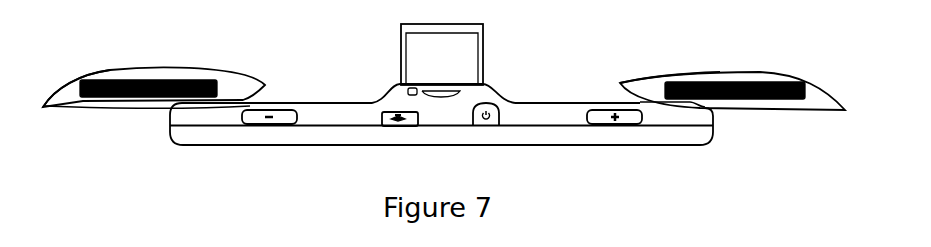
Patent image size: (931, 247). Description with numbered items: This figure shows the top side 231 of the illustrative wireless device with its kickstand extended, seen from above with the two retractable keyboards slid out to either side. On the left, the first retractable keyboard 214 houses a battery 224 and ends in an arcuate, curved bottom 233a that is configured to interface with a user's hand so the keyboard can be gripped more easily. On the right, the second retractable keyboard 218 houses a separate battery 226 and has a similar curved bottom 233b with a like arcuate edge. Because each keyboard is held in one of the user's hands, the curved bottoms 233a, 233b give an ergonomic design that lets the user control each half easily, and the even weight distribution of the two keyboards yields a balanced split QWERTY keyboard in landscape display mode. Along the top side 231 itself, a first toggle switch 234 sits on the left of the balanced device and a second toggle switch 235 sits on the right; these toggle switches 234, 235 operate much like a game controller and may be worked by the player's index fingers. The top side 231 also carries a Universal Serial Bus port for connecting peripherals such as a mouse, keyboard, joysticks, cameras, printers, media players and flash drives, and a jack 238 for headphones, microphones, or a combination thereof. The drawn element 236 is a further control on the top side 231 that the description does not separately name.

The first retractable keyboard 214 is at (62, 100).
The second retractable keyboard 218 is at (638, 90).
The battery 224 is at (180, 82).
The battery 226 is at (738, 83).
The top side 231 is at (513, 118).
The curved bottom 233a is at (143, 72).
The curved bottom 233b is at (710, 72).
The first toggle switch 234 is at (255, 127).
The second toggle switch 235 is at (623, 125).
The mode button 236 is at (388, 127).
The jack 238 is at (492, 123).